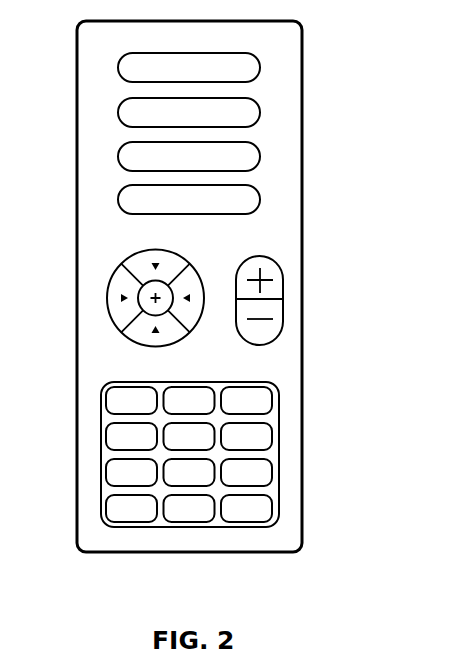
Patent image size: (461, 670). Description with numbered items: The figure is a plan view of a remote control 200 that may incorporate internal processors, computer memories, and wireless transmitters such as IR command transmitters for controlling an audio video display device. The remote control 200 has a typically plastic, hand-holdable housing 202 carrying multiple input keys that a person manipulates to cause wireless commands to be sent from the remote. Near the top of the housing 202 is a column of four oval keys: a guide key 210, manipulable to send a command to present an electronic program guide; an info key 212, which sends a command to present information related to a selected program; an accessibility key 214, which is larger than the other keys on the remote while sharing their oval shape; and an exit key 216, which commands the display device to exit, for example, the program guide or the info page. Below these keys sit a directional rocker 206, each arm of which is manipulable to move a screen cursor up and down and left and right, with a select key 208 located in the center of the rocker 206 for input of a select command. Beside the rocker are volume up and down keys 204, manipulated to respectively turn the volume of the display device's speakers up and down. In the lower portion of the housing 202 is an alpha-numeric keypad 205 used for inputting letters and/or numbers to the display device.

The remote control 200 is at (338, 139).
The housing 202 is at (296, 359).
The volume up and down keys 204 is at (284, 288).
The alpha-numeric keypad 205 is at (279, 453).
The directional rocker 206 is at (110, 280).
The select key 208 is at (141, 307).
The guide key 210 is at (118, 66).
The info key 212 is at (118, 111).
The accessibility key 214 is at (118, 155).
The exit key 216 is at (118, 198).